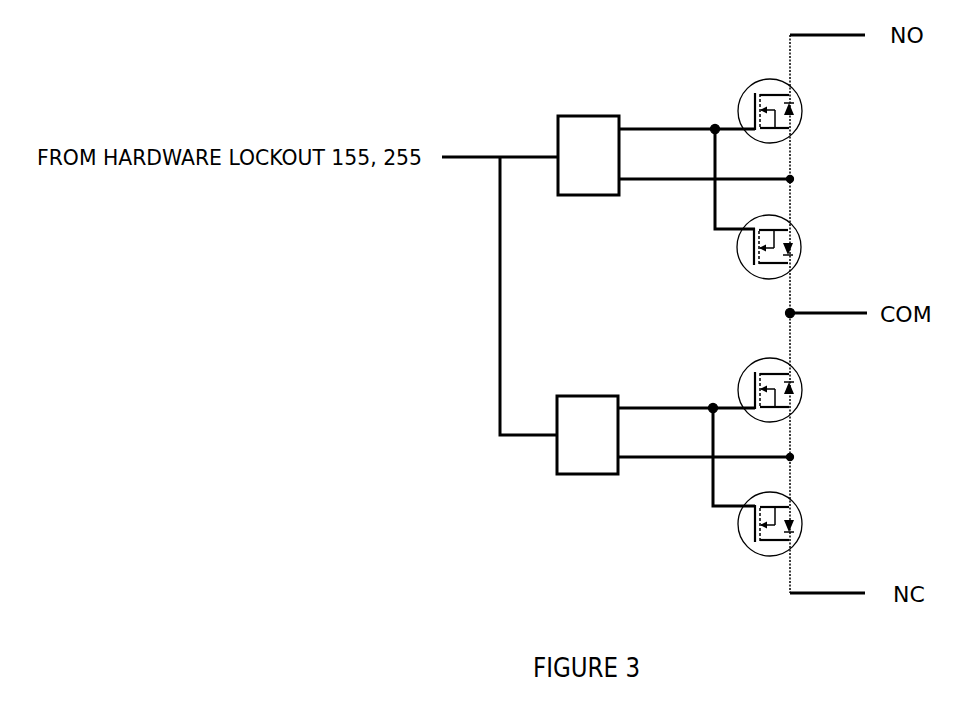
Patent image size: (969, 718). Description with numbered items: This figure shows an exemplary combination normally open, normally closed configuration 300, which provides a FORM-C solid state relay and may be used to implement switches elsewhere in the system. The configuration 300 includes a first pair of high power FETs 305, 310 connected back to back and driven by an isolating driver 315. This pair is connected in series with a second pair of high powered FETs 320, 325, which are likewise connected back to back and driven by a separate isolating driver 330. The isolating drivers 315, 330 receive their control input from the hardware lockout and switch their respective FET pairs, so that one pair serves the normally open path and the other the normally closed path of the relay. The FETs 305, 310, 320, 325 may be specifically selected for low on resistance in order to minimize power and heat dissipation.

The normally open, normally closed configuration 300 is at (652, 50).
The high power FET 305 is at (803, 121).
The high power FET 310 is at (800, 233).
The isolating driver 315 is at (674, 172).
The high powered FET 320 is at (803, 400).
The high powered FET 325 is at (803, 510).
The isolating driver 330 is at (673, 451).